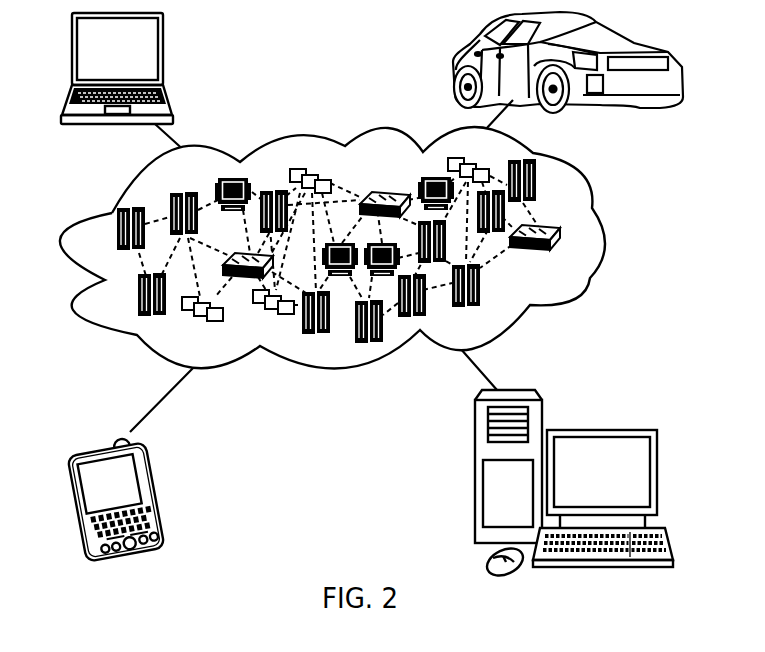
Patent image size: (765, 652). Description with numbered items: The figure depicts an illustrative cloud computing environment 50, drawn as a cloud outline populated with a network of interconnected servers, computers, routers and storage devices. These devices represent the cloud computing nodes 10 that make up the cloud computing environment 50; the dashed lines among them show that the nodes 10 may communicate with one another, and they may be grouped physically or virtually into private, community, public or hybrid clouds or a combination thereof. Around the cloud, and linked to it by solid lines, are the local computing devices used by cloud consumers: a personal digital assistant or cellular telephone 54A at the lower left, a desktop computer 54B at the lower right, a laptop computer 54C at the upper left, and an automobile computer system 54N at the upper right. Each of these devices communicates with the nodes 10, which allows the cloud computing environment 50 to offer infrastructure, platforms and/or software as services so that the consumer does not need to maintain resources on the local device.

The cloud computing nodes 10 is at (570, 259).
The cloud computing environment 50 is at (600, 238).
The personal digital assistant or cellular telephone 54A is at (158, 492).
The desktop computer 54B is at (604, 427).
The laptop computer 54C is at (166, 53).
The automobile computer system 54N is at (453, 63).